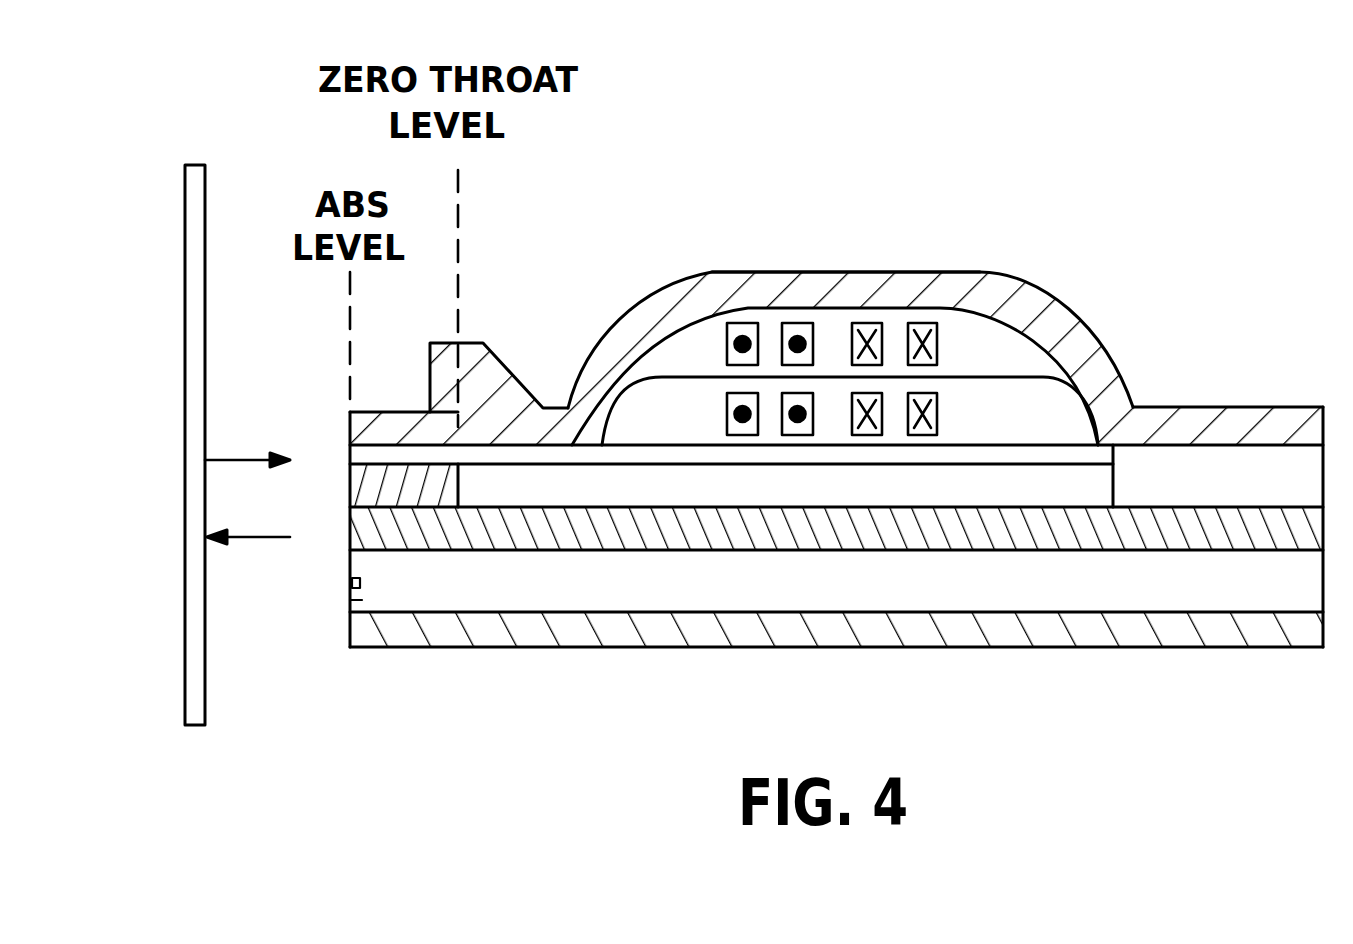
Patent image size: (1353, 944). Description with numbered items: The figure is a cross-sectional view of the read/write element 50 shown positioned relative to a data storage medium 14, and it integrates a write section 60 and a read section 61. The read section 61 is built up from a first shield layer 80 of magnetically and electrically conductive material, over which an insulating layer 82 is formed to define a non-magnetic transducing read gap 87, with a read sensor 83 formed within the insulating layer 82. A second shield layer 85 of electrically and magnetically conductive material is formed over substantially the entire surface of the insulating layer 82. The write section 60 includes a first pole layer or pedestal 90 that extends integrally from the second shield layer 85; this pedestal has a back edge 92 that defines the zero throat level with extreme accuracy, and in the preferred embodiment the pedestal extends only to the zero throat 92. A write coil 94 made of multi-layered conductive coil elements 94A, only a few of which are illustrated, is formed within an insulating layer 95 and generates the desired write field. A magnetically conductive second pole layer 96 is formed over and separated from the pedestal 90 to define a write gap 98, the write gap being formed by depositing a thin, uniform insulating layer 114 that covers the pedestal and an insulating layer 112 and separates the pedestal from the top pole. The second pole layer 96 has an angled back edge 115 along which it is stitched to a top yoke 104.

The data storage medium 14 is at (195, 380).
The read/write element 50 is at (1001, 157).
The write section 60 is at (238, 342).
The read section 61 is at (256, 651).
The first shield layer 80 is at (635, 632).
The insulating layer 82 is at (1050, 599).
The read sensor 83 is at (352, 588).
The second shield layer 85 is at (663, 512).
The read gap 87 is at (360, 600).
The first pole layer or pedestal P1 90 is at (353, 487).
The back edge 92 is at (460, 478).
The write coil 94 is at (1045, 271).
The coil elements 94A is at (925, 322).
The insulating layer 95 is at (1027, 353).
The second pole layer 96 is at (352, 423).
The write gap 98 is at (352, 455).
The top yoke 104 is at (775, 292).
The insulating layer 112 is at (1110, 488).
The insulating layer 114 is at (1117, 452).
The angled back edge 115 is at (526, 391).